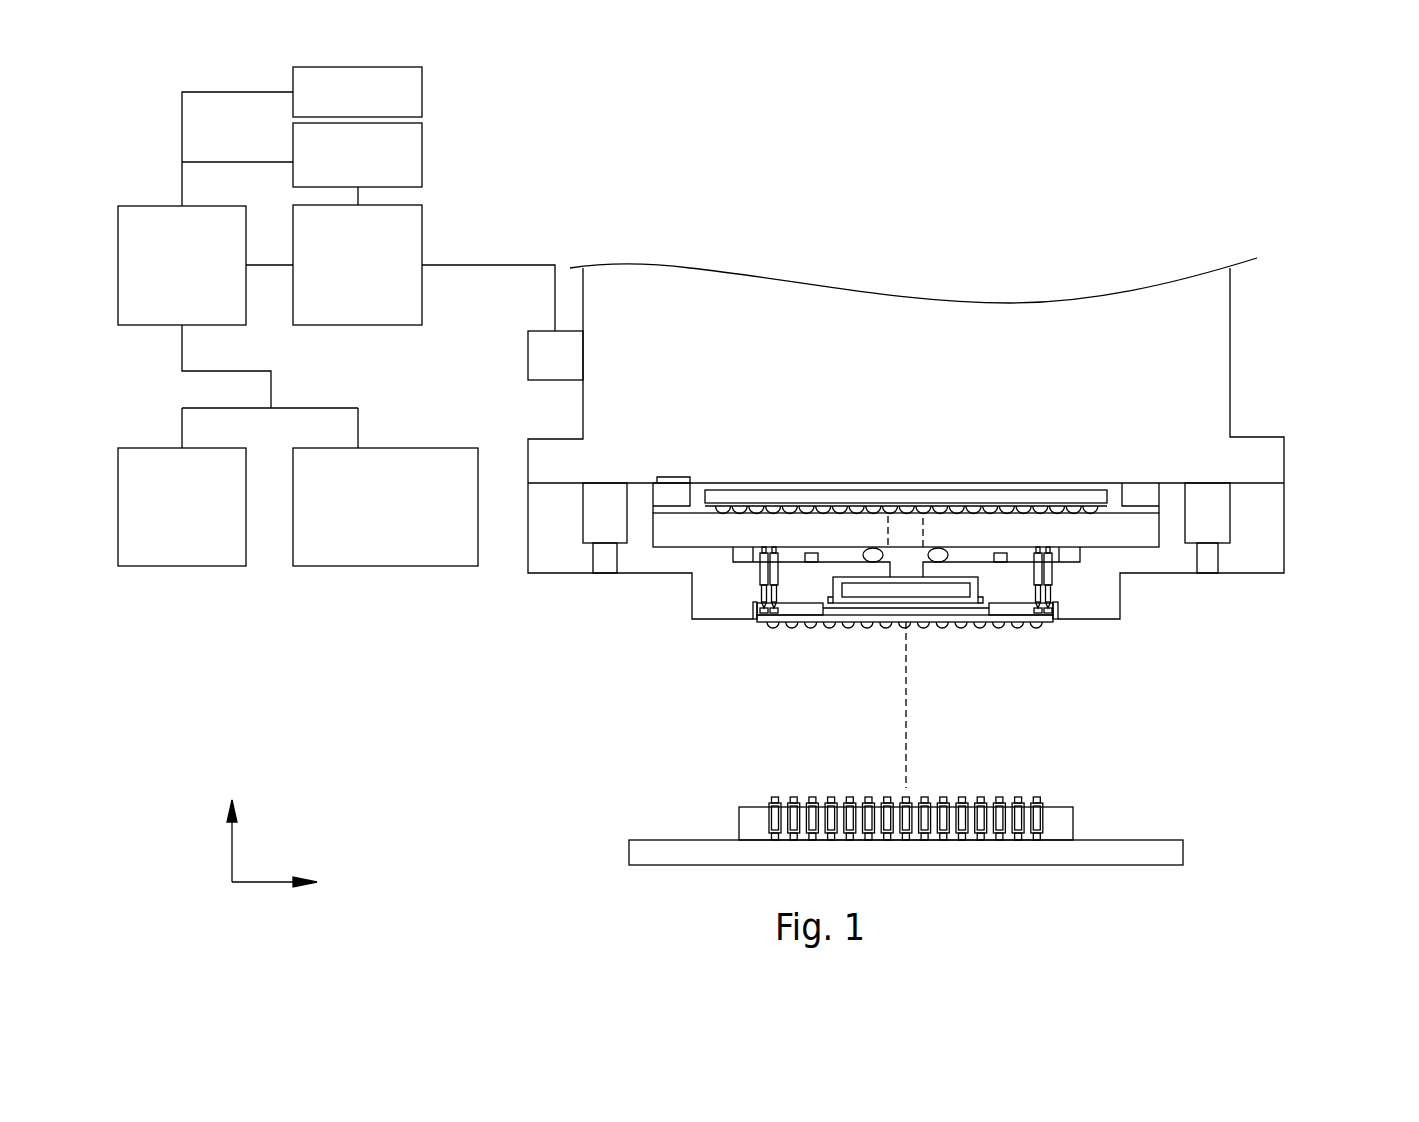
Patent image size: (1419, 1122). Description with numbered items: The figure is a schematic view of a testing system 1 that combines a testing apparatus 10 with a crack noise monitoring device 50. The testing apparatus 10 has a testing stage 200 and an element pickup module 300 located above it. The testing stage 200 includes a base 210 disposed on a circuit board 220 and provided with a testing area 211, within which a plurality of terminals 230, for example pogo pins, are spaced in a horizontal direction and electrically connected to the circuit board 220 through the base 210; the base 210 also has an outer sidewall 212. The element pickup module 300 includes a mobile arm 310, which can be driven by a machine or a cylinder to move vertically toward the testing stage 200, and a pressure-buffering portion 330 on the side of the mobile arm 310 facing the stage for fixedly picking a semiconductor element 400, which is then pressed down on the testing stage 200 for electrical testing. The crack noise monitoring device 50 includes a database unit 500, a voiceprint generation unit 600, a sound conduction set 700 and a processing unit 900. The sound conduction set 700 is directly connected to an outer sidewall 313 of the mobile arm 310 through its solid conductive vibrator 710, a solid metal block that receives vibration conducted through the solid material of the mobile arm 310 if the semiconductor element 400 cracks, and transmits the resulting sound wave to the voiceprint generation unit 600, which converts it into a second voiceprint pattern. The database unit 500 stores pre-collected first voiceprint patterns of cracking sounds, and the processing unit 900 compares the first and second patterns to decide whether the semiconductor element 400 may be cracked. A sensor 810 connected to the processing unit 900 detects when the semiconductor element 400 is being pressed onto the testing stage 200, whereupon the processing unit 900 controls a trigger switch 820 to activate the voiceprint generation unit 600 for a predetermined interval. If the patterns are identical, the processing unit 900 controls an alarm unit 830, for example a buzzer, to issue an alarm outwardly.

The testing system 1 is at (145, 54).
The testing apparatus 10 is at (1370, 238).
The crack noise monitoring device 50 is at (1370, 33).
The testing stage 200 is at (1270, 770).
The base 210 is at (1073, 808).
The testing area 211 is at (854, 765).
The outer sidewall 212 is at (739, 825).
The circuit board 220 is at (1183, 850).
The terminals 230 is at (1043, 822).
The element pickup module 300 is at (1395, 612).
The mobile arm 310 is at (1277, 470).
The outer sidewall 313 is at (583, 298).
The pressure-buffering portion 330 is at (983, 598).
The semiconductor element 400 is at (757, 633).
The database unit 500 is at (358, 566).
The voiceprint generation unit 600 is at (423, 229).
The sound conduction set 700 is at (555, 300).
The solid conductive vibrator 710 is at (540, 358).
The sensor 810 is at (423, 88).
The trigger switch 820 is at (423, 160).
The alarm unit 830 is at (182, 566).
The processing unit 900 is at (148, 206).